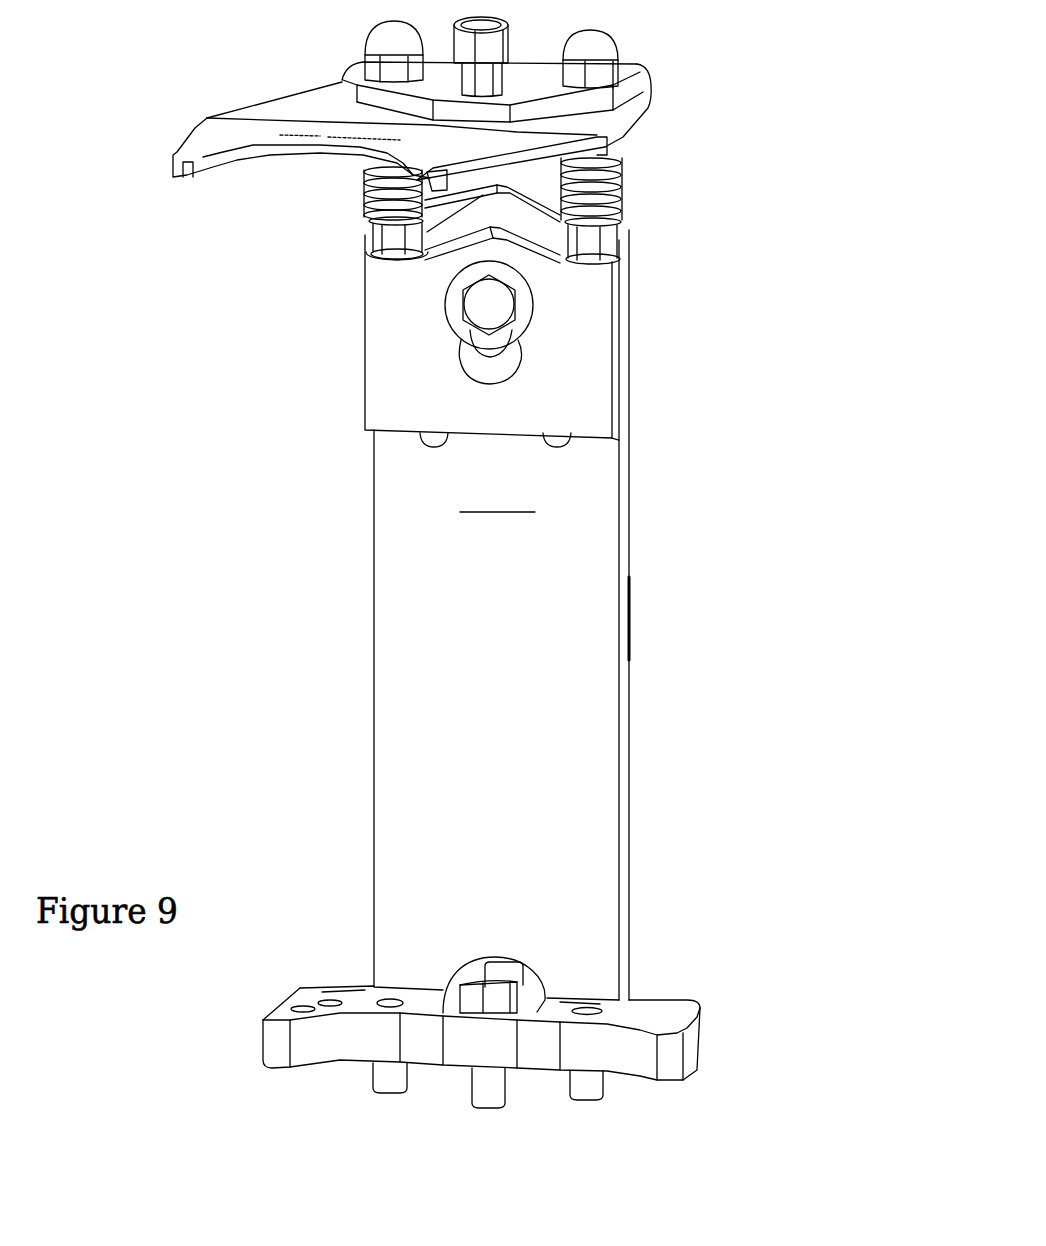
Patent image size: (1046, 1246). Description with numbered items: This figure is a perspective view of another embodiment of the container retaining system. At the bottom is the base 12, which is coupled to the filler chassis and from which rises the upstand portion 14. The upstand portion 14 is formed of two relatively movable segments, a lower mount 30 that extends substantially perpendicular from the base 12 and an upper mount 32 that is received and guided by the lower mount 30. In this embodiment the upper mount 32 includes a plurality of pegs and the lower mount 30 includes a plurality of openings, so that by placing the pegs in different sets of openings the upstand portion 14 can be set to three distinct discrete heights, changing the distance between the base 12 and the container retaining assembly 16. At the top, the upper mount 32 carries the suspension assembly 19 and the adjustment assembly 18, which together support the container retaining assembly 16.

The base 12 is at (270, 1058).
The upstand portion 14 is at (566, 615).
The container retaining assembly 16 is at (637, 67).
The adjustment assembly 18 is at (452, 327).
The suspension assembly 19 is at (622, 180).
The lower mount 30 is at (619, 802).
The upper mount 32 is at (617, 353).